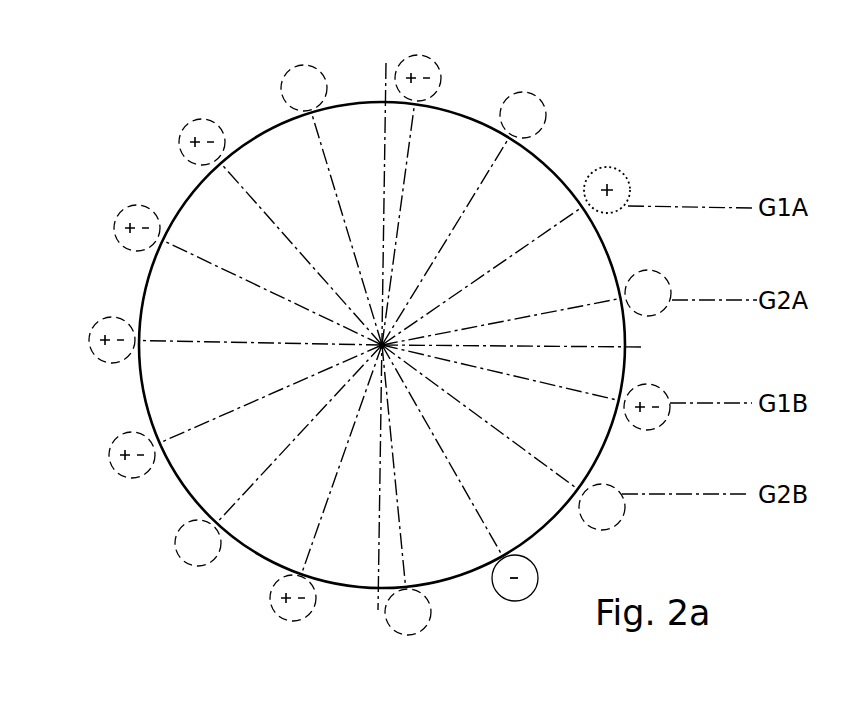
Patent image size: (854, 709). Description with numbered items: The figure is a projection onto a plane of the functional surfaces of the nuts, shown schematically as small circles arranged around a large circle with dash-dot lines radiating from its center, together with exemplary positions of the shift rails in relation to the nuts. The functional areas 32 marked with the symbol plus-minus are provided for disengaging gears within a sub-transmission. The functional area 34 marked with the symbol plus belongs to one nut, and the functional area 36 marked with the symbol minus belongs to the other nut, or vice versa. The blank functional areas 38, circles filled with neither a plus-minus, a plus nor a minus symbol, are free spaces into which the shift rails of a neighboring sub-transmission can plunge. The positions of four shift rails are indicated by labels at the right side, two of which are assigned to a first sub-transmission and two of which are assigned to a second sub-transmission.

The functional areas 32 is at (700, 370).
The functional area 34 is at (620, 172).
The functional area 36 is at (523, 590).
The blank functional areas 38 is at (172, 620).